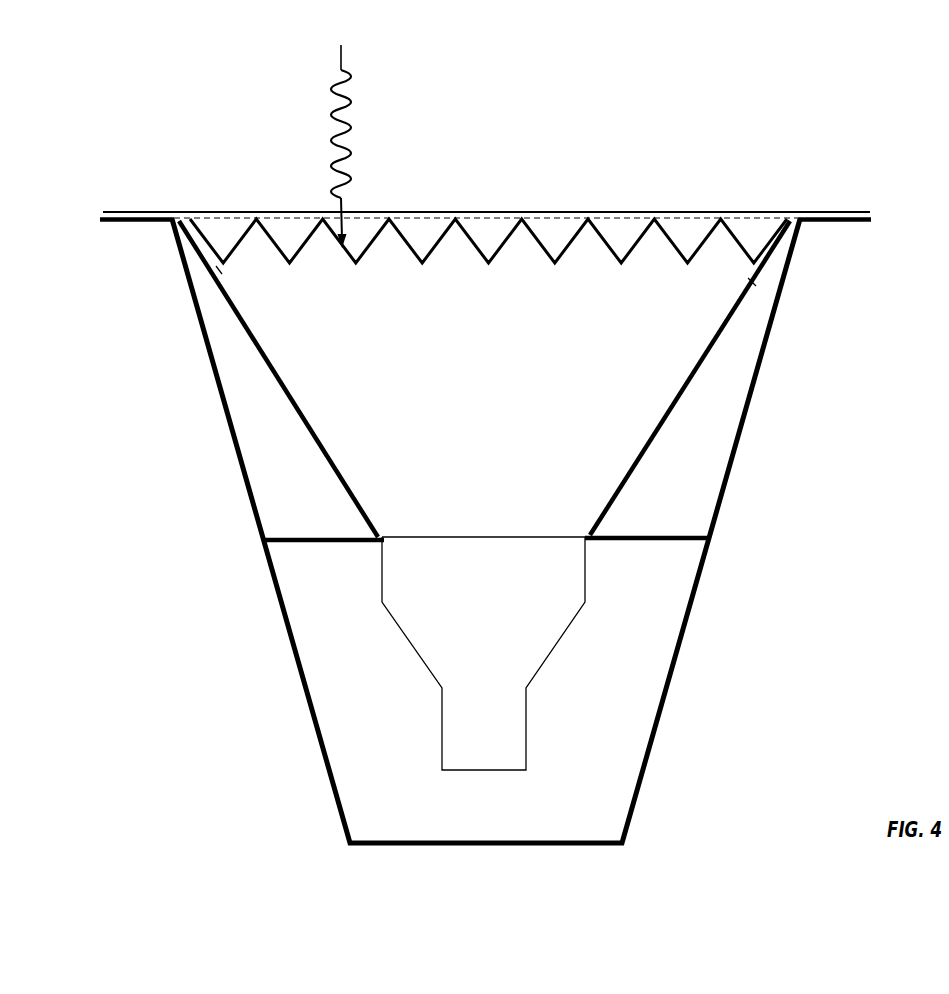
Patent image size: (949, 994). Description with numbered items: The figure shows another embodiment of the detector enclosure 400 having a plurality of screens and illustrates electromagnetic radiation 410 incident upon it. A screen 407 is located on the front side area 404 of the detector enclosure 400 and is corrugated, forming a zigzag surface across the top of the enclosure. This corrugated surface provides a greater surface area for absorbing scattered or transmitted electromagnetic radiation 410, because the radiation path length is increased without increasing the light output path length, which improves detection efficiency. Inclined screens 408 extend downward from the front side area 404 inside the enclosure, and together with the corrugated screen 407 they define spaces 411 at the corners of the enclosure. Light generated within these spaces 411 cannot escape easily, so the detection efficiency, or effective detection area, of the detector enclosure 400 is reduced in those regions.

The detector enclosure 400 is at (148, 760).
The front side area 404 is at (540, 210).
The screen 407 is at (662, 230).
The screen 408 is at (255, 346).
The electromagnetic radiation 410 is at (349, 134).
The spaces 411 is at (172, 215).